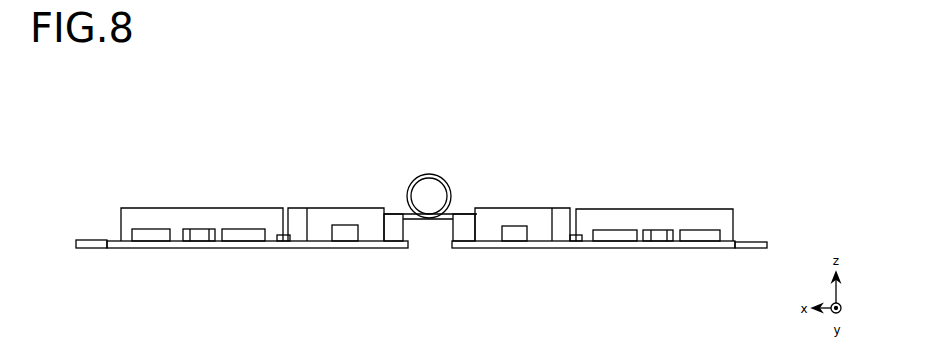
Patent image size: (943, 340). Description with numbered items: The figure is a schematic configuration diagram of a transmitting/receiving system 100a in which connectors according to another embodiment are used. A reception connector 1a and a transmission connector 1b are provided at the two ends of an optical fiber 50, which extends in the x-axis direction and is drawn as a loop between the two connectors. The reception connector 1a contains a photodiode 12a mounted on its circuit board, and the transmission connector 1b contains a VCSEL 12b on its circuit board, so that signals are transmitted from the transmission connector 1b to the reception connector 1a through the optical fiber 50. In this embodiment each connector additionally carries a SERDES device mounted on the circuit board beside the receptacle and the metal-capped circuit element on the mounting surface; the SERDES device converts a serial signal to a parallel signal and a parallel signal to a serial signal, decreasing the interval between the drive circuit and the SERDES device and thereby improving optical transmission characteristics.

The transmitting/receiving system 100a is at (172, 80).
The reception connector 1a is at (281, 268).
The transmission connector 1b is at (611, 268).
The photodiode 12a is at (344, 225).
The VCSEL 12b is at (513, 226).
The optical fiber 50 is at (438, 222).